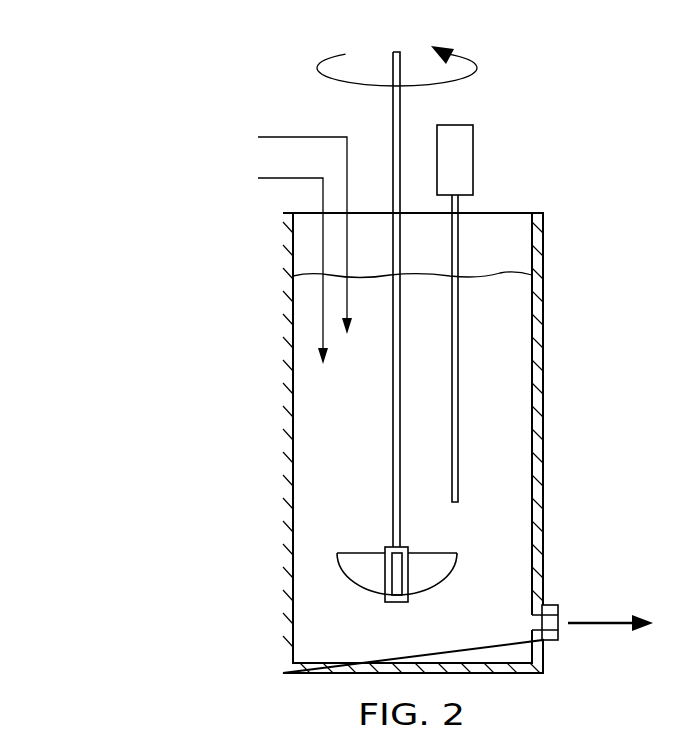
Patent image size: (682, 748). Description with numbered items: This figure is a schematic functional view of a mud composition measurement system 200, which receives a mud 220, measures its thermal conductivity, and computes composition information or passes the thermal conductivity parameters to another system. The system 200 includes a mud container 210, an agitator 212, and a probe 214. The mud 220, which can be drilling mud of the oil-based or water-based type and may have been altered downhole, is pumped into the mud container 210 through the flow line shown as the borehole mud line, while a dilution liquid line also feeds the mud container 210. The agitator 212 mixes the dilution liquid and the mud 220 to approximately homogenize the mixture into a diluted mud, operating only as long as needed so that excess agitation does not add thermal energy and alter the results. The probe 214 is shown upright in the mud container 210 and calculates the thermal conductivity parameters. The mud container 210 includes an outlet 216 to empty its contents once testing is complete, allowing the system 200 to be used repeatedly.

The mud composition measurement system 200 is at (224, 78).
The mud container 210 is at (283, 398).
The agitator 212 is at (393, 122).
The probe 214 is at (473, 161).
The outlet 216 is at (558, 627).
The mud 220 is at (318, 449).